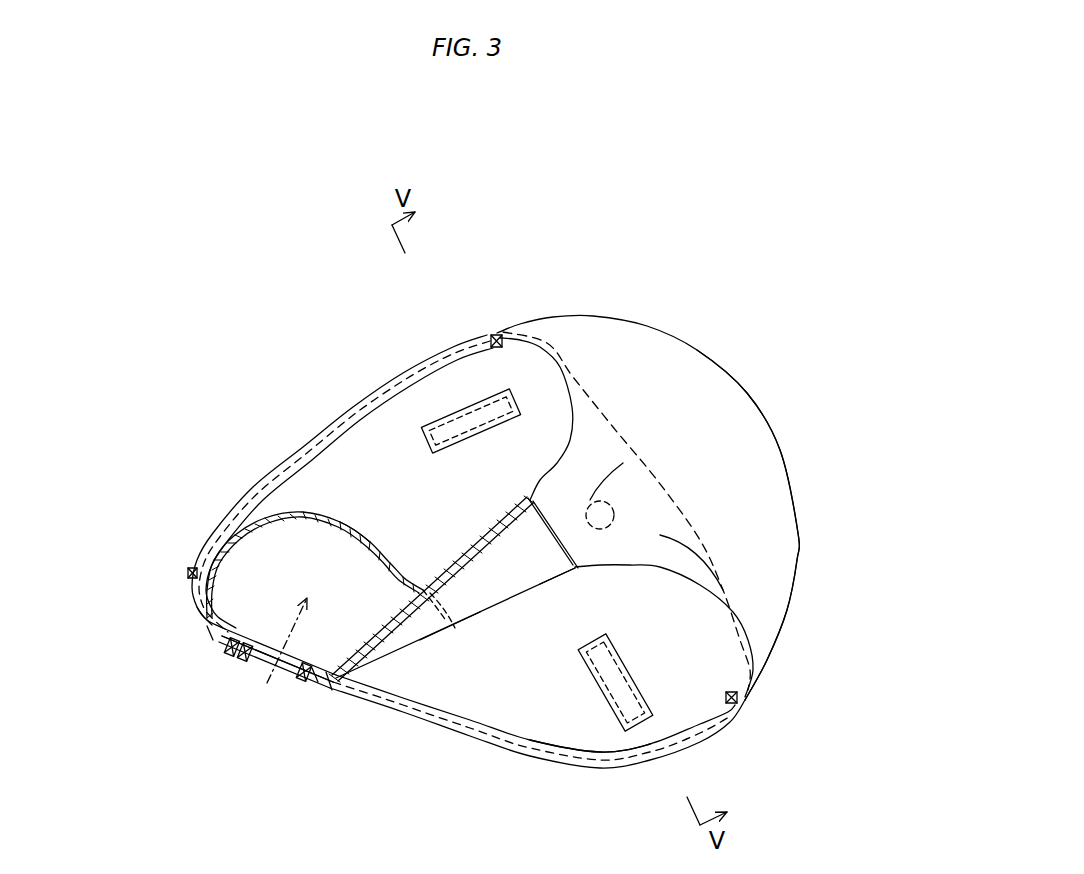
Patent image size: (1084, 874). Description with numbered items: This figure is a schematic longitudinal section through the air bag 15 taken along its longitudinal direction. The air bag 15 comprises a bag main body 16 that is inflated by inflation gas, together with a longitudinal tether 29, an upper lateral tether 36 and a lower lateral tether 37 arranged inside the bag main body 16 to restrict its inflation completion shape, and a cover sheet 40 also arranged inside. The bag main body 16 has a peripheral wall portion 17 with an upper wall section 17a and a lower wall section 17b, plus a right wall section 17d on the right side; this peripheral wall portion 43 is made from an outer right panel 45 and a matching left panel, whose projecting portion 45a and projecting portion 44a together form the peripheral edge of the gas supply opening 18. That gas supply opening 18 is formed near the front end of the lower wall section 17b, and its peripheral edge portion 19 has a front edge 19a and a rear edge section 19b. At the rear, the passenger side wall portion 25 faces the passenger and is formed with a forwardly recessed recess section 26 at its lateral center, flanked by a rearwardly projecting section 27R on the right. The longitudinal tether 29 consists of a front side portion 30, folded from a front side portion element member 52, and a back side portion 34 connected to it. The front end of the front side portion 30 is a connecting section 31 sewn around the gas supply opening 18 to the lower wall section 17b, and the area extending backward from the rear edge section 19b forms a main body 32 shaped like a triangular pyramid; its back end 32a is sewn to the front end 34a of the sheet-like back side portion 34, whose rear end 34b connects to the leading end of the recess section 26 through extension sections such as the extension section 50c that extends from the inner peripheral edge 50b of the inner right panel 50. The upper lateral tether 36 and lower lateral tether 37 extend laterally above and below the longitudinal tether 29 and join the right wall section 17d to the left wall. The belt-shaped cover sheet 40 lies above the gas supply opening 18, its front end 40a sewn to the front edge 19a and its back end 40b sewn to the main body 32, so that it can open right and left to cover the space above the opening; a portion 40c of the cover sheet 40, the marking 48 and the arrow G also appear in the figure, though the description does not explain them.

The air bag 15 is at (722, 222).
The bag main body 16 is at (528, 298).
The peripheral wall portion 17 is at (358, 400).
The upper wall section 17a is at (325, 433).
The lower wall section 17b is at (497, 743).
The right wall section 17d is at (530, 663).
The gas supply opening 18 is at (270, 672).
The peripheral edge portion 19 is at (329, 690).
The front edge 19a is at (207, 633).
The rear edge section 19b is at (330, 692).
The passenger side wall portion 25 is at (748, 360).
The recess section 26 is at (623, 380).
The projecting section 27R is at (636, 318).
The longitudinal tether 29 is at (460, 640).
The front side portion 30 is at (463, 548).
The front side portion element member 52 is at (432, 589).
The connecting section 31 is at (317, 670).
The main body 32 is at (483, 597).
The back end 32a is at (573, 573).
The back side portion 34 is at (663, 577).
The front end 34a is at (547, 513).
The rear end 34b is at (623, 463).
The upper lateral tether 36 is at (470, 400).
The lower lateral tether 37 is at (642, 733).
The cover sheet 40 is at (287, 503).
The front end 40a is at (200, 623).
The back end 40b is at (455, 628).
The inner bag upper portion 40c is at (343, 517).
The peripheral wall portion 43 is at (349, 488).
The projecting portion 44a is at (242, 650).
The outer right panel 45 is at (410, 403).
The projecting portion 45a is at (233, 650).
The cover panel 48 is at (748, 525).
The inner right panel 50 is at (767, 457).
The inner peripheral edge 50b is at (540, 350).
The extension section 50c is at (660, 535).
The gas flow direction G is at (292, 626).